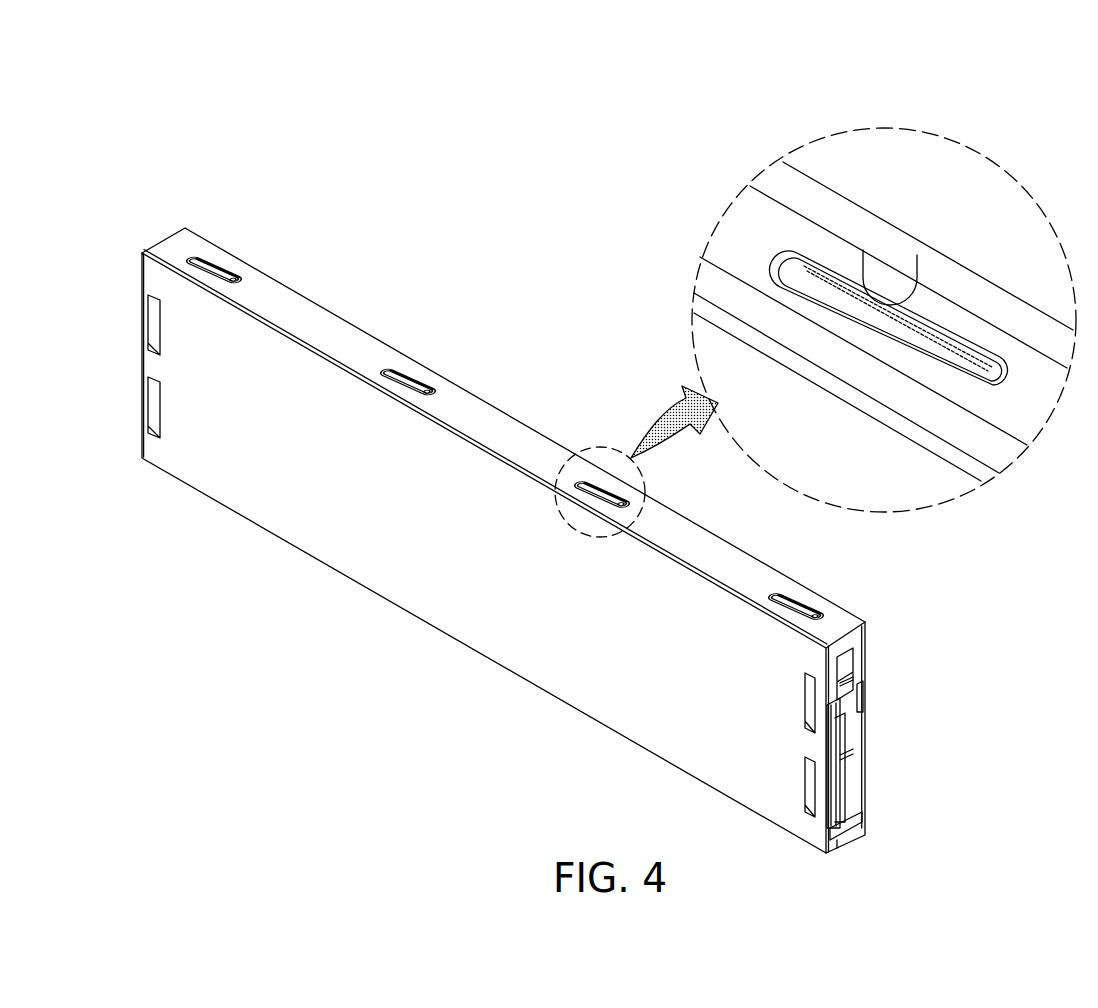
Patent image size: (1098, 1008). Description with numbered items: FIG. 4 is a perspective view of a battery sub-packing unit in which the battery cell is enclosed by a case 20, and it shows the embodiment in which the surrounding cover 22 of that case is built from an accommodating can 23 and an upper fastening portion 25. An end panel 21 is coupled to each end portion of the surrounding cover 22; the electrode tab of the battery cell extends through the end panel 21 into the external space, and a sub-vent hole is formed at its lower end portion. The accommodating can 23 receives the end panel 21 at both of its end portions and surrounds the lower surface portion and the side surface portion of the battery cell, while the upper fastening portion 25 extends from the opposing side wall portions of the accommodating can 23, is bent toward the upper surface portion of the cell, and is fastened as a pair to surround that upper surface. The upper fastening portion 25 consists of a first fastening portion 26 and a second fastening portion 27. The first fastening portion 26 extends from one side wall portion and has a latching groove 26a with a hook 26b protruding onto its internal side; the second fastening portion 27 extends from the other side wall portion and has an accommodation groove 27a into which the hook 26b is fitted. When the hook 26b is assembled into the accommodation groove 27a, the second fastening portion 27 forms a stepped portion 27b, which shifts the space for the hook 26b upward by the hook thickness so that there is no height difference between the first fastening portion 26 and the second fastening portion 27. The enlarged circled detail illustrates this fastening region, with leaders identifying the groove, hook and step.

The case 20 is at (1040, 652).
The end panel 21 is at (847, 745).
The surrounding cover 22 is at (997, 608).
The accommodating can 23 is at (732, 702).
The upper fastening portion 25 is at (750, 578).
The first fastening portion 26 is at (1066, 318).
The latching groove 26a is at (863, 280).
The hook 26b is at (922, 312).
The second fastening portion 27 is at (713, 292).
The accommodation groove 27a is at (783, 290).
The stepped portion 27b is at (818, 287).